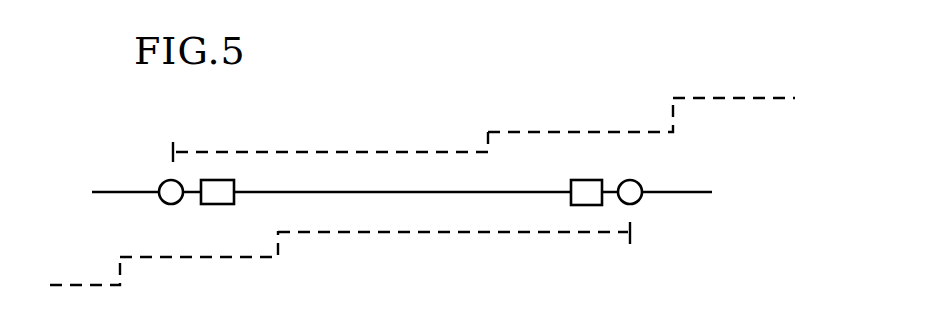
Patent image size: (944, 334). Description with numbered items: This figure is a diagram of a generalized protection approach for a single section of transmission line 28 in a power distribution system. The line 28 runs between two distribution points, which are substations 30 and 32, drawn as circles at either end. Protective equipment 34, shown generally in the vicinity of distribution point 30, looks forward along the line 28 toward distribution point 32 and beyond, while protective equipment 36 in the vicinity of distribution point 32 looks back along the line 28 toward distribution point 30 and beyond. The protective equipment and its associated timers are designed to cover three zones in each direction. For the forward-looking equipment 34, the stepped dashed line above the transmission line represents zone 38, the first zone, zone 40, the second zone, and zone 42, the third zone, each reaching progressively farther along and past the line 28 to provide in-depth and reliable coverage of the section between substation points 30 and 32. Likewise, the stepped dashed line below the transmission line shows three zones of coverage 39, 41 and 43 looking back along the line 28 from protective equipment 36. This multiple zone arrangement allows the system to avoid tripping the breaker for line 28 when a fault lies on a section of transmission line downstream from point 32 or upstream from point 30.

The transmission line section 28 is at (407, 192).
The distribution point 30 is at (165, 181).
The distribution point 32 is at (640, 182).
The protective equipment 34 is at (234, 182).
The protective equipment 36 is at (590, 180).
The first zone 38 is at (327, 152).
The first backward zone of coverage 39 is at (458, 233).
The second zone 40 is at (573, 132).
The second backward zone of coverage 41 is at (200, 257).
The third zone 42 is at (705, 98).
The third backward zone of coverage 43 is at (75, 285).